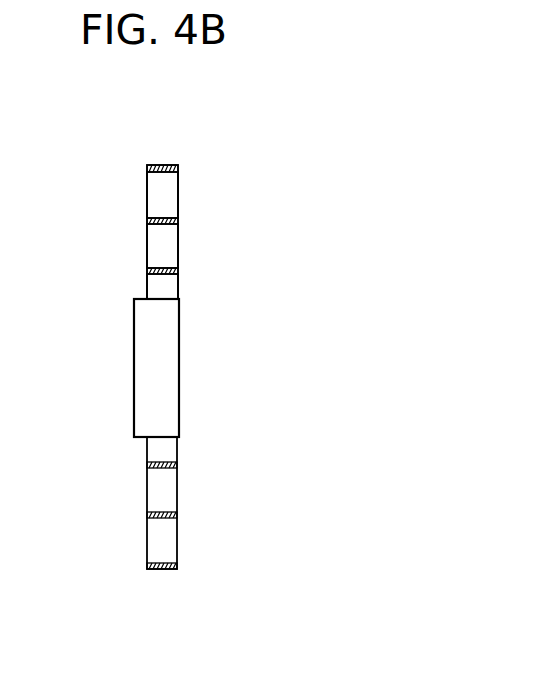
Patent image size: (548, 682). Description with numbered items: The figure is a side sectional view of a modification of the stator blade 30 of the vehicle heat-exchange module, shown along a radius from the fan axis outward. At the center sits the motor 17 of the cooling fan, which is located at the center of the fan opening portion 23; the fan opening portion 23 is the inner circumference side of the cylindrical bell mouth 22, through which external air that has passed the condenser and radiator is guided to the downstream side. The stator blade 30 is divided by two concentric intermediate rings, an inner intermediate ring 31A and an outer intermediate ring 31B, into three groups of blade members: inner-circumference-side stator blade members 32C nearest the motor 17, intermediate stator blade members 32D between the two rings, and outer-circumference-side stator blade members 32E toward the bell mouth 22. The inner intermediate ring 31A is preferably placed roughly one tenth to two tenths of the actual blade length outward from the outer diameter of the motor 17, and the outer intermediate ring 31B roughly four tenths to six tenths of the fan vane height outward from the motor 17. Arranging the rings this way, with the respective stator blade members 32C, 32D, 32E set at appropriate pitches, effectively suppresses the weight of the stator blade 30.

The stator blade 30 is at (163, 163).
The outer-circumference-side stator blade members 32E is at (150, 183).
The outer intermediate ring 31B is at (167, 217).
The intermediate stator blade members 32D is at (150, 238).
The inner intermediate ring 31A is at (167, 268).
The inner-circumference-side stator blade members 32C is at (150, 283).
The motor 17 is at (170, 368).
The bell mouth 22 is at (163, 570).
The fan opening portion 23 is at (165, 558).